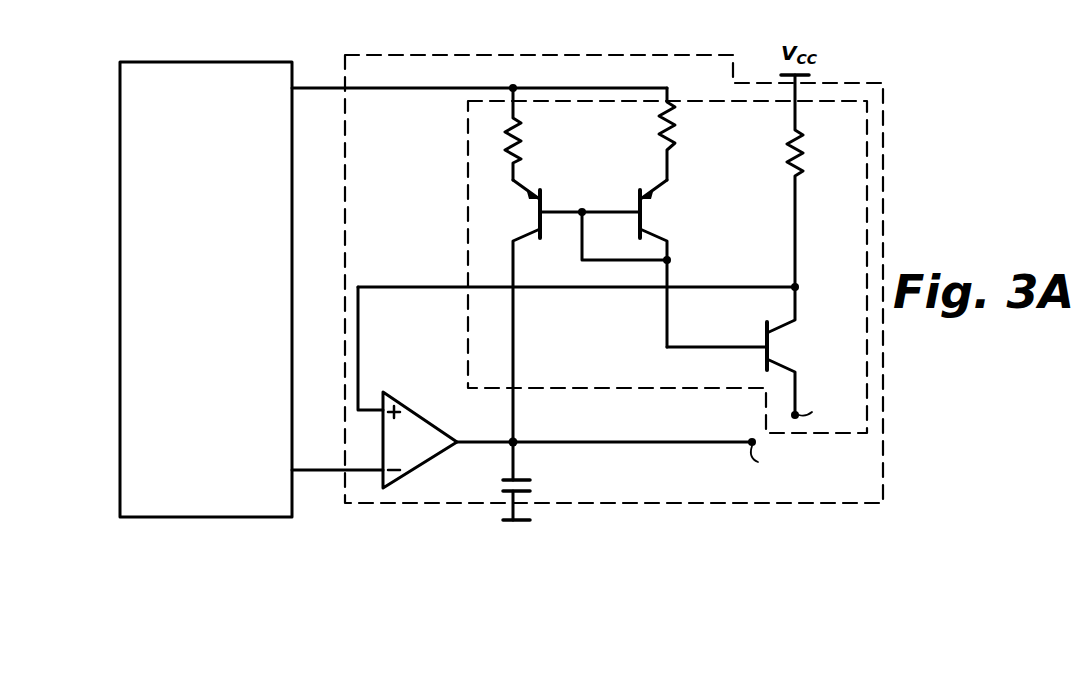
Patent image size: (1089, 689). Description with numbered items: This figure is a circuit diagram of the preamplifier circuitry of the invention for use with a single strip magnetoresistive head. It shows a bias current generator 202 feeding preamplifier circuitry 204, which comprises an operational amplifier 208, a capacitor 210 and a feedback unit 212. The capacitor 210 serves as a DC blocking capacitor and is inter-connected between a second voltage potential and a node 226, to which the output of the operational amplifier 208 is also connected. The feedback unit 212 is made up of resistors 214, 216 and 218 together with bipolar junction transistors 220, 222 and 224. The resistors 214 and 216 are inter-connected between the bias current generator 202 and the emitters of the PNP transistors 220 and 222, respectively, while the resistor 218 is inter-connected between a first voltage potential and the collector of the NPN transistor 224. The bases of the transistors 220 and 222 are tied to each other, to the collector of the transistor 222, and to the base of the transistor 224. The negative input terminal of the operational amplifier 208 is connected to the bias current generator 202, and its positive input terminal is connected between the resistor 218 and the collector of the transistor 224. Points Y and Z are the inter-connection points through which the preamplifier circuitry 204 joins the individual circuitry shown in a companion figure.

The bias current generator 202 is at (120, 120).
The preamplifier circuitry 204 is at (455, 57).
The operational amplifier 208 is at (410, 404).
The capacitor 210 is at (530, 478).
The feedback unit 212 is at (468, 162).
The resistor 214 is at (522, 130).
The resistor 216 is at (676, 120).
The resistor 218 is at (797, 137).
The PNP bipolar junction transistor 220 is at (548, 198).
The PNP bipolar junction transistor 222 is at (645, 202).
The NPN bipolar junction transistor 224 is at (770, 335).
The node 226 is at (520, 438).